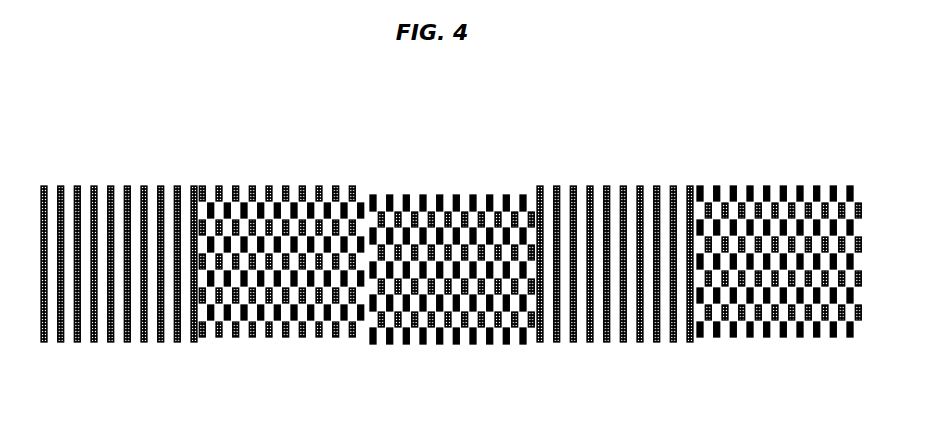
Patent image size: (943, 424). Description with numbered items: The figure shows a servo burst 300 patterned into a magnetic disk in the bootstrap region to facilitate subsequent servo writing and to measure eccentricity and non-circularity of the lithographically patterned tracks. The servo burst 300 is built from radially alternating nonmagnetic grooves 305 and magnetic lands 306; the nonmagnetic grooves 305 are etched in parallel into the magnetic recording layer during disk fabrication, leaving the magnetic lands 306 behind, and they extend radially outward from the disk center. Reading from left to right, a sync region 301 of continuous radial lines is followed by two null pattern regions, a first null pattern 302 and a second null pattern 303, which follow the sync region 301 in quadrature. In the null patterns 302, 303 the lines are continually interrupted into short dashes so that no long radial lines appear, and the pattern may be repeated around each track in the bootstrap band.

The servo burst 300 is at (161, 58).
The sync region 301 is at (40, 345).
The null pattern 302 is at (277, 283).
The null pattern 303 is at (540, 345).
The nonmagnetic grooves 305 is at (142, 186).
The magnetic lands 306 is at (190, 186).